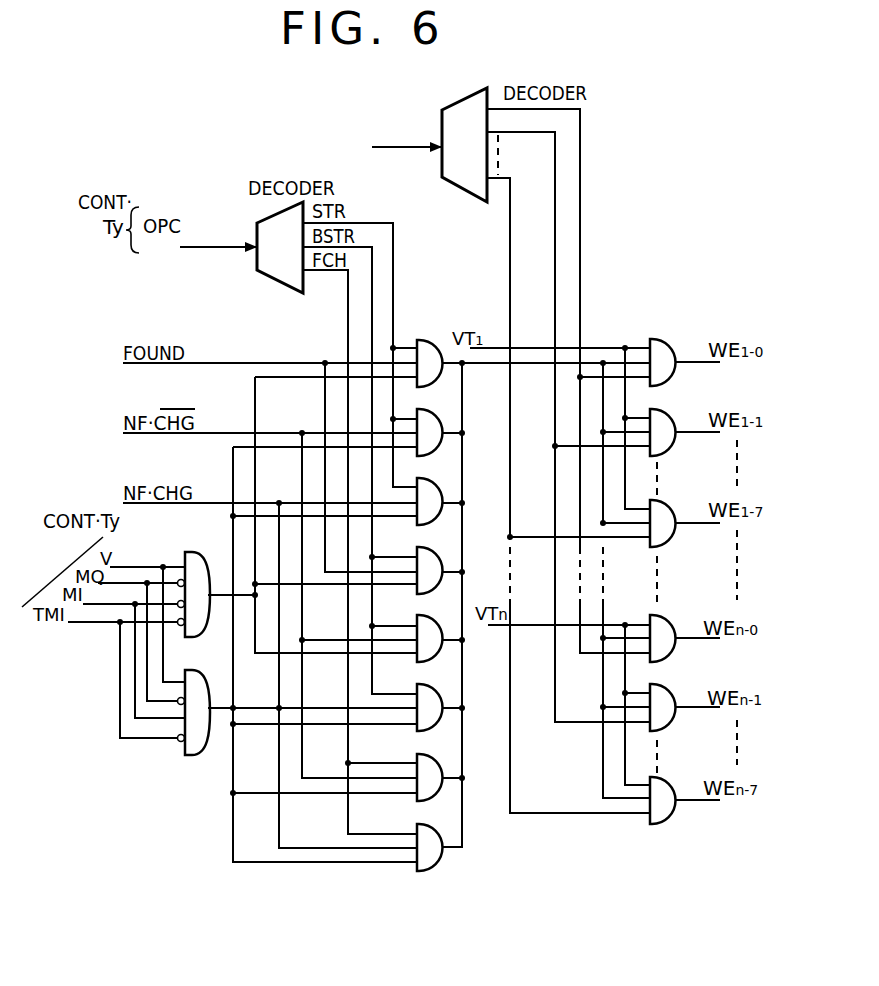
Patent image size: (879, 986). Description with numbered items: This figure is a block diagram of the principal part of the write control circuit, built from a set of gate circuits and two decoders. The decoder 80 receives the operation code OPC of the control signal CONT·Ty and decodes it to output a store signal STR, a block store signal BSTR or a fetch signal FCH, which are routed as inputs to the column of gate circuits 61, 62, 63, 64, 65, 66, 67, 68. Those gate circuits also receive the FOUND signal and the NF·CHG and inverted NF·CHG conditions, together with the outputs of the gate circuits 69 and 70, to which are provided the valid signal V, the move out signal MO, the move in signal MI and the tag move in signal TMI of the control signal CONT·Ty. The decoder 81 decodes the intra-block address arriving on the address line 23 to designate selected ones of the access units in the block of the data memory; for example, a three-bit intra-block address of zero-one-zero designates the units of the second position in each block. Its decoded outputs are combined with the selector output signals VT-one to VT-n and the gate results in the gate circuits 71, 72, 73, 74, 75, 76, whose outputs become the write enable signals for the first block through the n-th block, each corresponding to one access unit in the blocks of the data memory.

The address line 23 is at (380, 146).
The gate circuit 61 is at (423, 340).
The gate circuit 62 is at (437, 405).
The gate circuit 63 is at (437, 474).
The gate circuit 64 is at (437, 545).
The gate circuit 65 is at (437, 613).
The gate circuit 66 is at (437, 682).
The gate circuit 67 is at (437, 752).
The gate circuit 68 is at (437, 820).
The gate circuit 69 is at (188, 552).
The gate circuit 70 is at (190, 670).
The gate circuit 71 is at (660, 339).
The gate circuit 72 is at (663, 410).
The gate circuit 73 is at (663, 501).
The gate circuit 74 is at (664, 616).
The gate circuit 75 is at (665, 685).
The gate circuit 76 is at (665, 778).
The decoder 80 is at (279, 283).
The decoder 81 is at (452, 185).